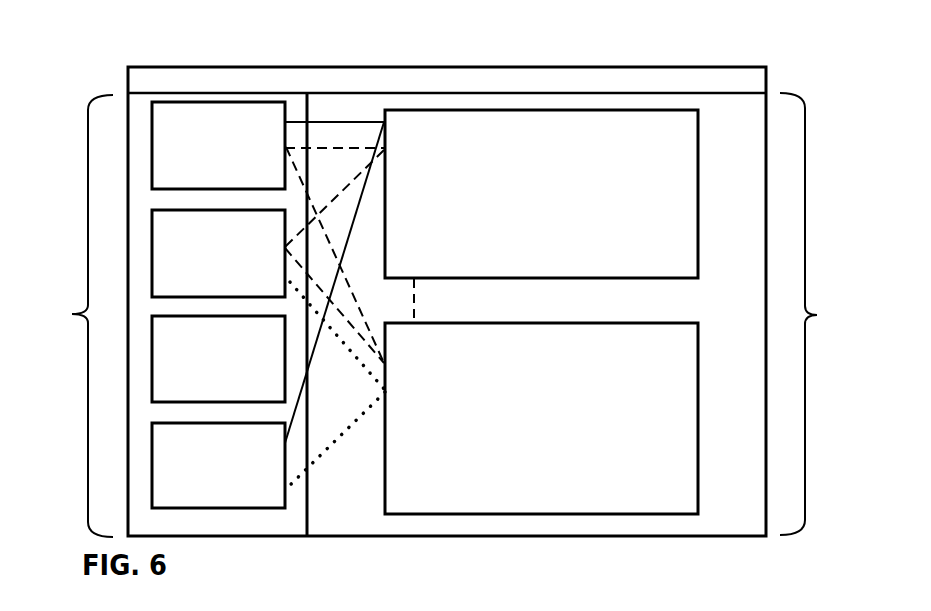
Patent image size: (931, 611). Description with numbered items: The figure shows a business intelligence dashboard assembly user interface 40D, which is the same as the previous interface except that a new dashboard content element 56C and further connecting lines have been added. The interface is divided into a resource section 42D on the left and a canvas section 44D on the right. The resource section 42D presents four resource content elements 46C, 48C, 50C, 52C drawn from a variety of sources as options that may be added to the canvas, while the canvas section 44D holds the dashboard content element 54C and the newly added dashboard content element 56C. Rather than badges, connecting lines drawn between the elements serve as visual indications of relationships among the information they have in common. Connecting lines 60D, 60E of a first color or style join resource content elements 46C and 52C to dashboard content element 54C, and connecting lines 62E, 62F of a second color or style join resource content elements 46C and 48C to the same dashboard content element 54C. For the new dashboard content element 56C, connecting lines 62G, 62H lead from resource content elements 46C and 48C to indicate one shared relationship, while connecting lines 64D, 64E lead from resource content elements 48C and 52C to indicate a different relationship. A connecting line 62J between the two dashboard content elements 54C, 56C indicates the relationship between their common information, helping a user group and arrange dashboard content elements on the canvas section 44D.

The dashboard assembly user interface 40D is at (135, 53).
The resource section 42D is at (168, 315).
The canvas section 44D is at (625, 314).
The resource content element 46C is at (158, 145).
The resource content element 48C is at (158, 253).
The resource content element 50C is at (159, 359).
The resource content element 52C is at (159, 465).
The dashboard content element 54C is at (573, 187).
The dashboard content element 56C is at (573, 418).
The connecting line 60D is at (315, 122).
The connecting line 60E is at (363, 282).
The connecting line 62E is at (315, 148).
The connecting line 62F is at (342, 193).
The connecting line 62G is at (355, 300).
The connecting line 62H is at (346, 305).
The connecting line 62J is at (458, 300).
The connecting line 64D is at (337, 350).
The connecting line 64E is at (335, 452).